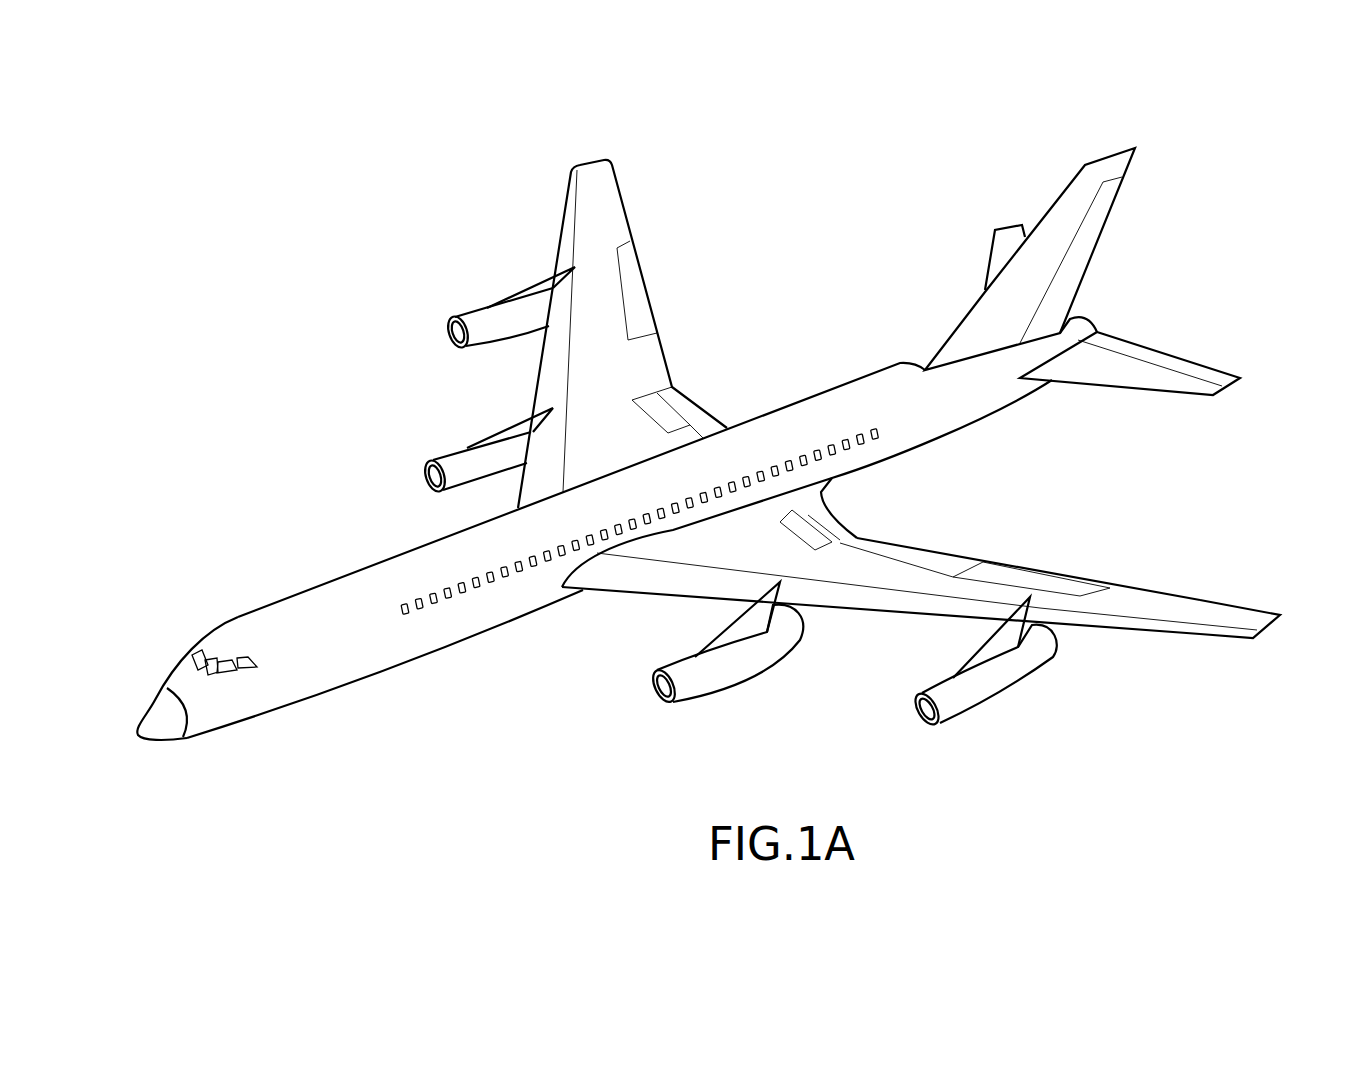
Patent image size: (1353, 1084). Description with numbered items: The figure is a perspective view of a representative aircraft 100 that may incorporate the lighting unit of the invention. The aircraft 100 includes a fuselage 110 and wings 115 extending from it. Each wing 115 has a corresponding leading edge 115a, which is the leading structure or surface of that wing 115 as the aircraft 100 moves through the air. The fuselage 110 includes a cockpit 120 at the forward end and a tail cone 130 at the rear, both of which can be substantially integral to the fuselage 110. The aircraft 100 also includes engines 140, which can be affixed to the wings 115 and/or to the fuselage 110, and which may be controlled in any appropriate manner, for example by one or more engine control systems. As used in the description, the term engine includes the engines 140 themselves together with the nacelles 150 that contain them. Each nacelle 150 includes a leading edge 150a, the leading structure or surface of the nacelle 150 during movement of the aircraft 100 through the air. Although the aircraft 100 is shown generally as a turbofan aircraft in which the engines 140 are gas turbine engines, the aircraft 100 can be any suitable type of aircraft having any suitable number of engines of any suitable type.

The aircraft 100 is at (218, 243).
The fuselage 110 is at (467, 657).
The wings 115 is at (632, 240).
The leading edge 115a is at (1130, 628).
The cockpit 120 is at (192, 627).
The tail cone 130 is at (1050, 398).
The engines 140 is at (463, 418).
The nacelles 150 is at (942, 723).
The leading edge 150a is at (924, 722).